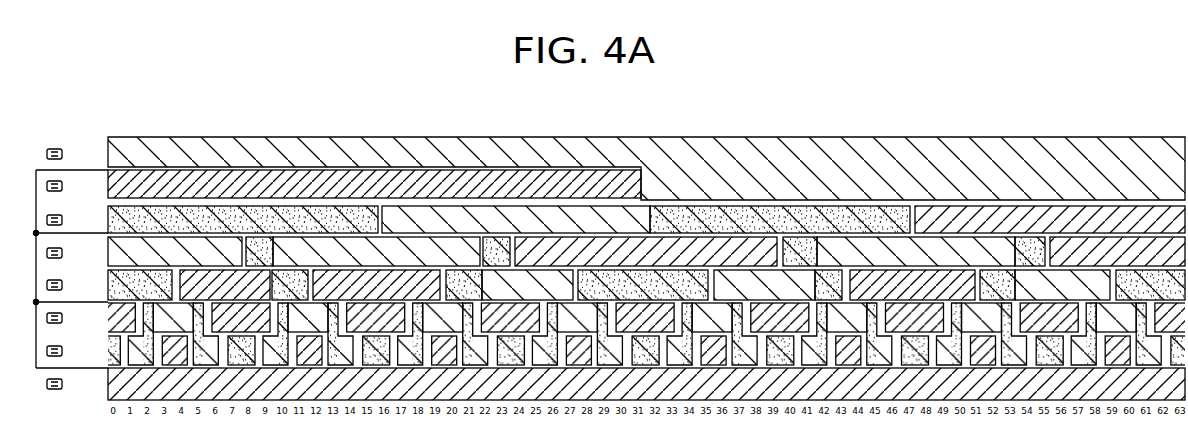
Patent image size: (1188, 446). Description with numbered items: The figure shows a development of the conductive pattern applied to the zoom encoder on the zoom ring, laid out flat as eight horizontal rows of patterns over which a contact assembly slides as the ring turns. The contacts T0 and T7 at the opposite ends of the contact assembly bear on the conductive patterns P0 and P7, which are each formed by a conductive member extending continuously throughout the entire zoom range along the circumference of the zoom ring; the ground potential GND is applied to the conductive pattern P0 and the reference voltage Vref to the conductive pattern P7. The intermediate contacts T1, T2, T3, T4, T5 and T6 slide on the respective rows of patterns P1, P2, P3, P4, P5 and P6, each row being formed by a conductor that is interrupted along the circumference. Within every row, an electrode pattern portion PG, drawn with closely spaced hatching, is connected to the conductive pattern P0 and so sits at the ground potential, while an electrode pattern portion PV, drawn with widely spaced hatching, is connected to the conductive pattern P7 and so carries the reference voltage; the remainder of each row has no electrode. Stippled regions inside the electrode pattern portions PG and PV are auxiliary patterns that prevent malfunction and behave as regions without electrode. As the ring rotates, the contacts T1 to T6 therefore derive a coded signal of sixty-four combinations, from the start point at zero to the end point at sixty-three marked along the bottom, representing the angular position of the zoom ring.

The contact T7 is at (47, 154).
The contact T6 is at (47, 186).
The contact T5 is at (47, 220).
The contact T4 is at (47, 253).
The contact T3 is at (47, 285).
The contact T2 is at (47, 318).
The contact T1 is at (47, 351).
The contact T0 is at (47, 384).
The conductive pattern P7 is at (106, 157).
The pattern P6 is at (106, 189).
The pattern P5 is at (106, 223).
The pattern P4 is at (106, 256).
The pattern P3 is at (106, 288).
The pattern P2 is at (106, 321).
The pattern P1 is at (106, 354).
The conductive pattern P0 is at (106, 387).
The electrode pattern portion PV is at (421, 252).
The electrode pattern portion PG is at (598, 248).